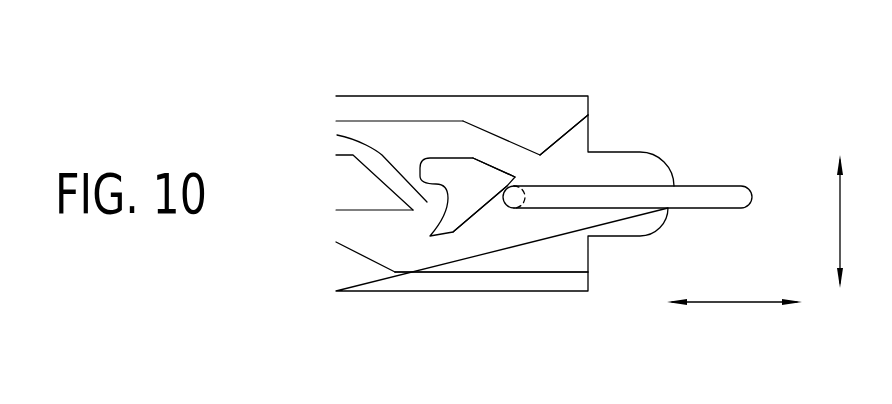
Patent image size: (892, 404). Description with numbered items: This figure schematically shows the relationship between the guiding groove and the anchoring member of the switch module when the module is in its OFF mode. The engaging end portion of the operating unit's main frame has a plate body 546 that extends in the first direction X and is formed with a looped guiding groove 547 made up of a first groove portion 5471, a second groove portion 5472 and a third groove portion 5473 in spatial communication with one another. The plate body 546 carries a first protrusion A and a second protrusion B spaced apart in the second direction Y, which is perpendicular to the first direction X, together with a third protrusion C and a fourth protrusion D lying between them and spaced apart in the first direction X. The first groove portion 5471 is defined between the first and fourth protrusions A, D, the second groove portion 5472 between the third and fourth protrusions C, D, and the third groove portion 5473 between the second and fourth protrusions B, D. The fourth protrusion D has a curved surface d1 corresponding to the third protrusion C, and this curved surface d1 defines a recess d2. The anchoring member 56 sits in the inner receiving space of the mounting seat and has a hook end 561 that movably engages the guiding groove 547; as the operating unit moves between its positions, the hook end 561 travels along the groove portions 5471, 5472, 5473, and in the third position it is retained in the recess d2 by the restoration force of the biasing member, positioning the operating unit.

The plate body 546 is at (375, 82).
The looped guiding groove 547 is at (487, 143).
The first groove portion 5471 is at (483, 218).
The second groove portion 5472 is at (337, 135).
The third groove portion 5473 is at (502, 160).
The anchoring member 56 is at (695, 185).
The hook end 561 is at (522, 209).
The first protrusion A is at (457, 280).
The second protrusion B is at (545, 110).
The third protrusion C is at (357, 188).
The fourth protrusion D is at (452, 178).
The curved surface d1 is at (420, 176).
The recess d2 is at (438, 200).
The first direction X is at (734, 283).
The second direction Y is at (854, 217).